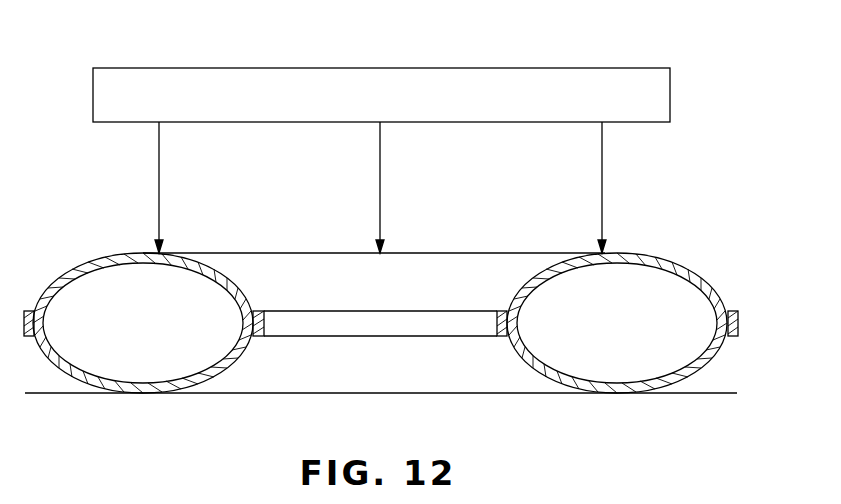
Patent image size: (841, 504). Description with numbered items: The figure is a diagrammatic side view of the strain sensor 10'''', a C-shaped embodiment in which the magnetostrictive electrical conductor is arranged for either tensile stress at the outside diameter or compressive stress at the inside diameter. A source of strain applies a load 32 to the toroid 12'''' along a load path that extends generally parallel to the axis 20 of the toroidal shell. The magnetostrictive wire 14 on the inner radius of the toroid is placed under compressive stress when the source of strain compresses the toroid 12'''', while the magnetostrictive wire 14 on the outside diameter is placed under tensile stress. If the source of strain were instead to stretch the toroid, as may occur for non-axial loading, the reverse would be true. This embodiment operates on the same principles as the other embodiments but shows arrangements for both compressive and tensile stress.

The load 32 is at (145, 72).
The axis 20 is at (158, 182).
The strain sensor 10'''' is at (407, 248).
The toroid 12'''' is at (380, 294).
The magnetostrictive wire 14 is at (775, 400).